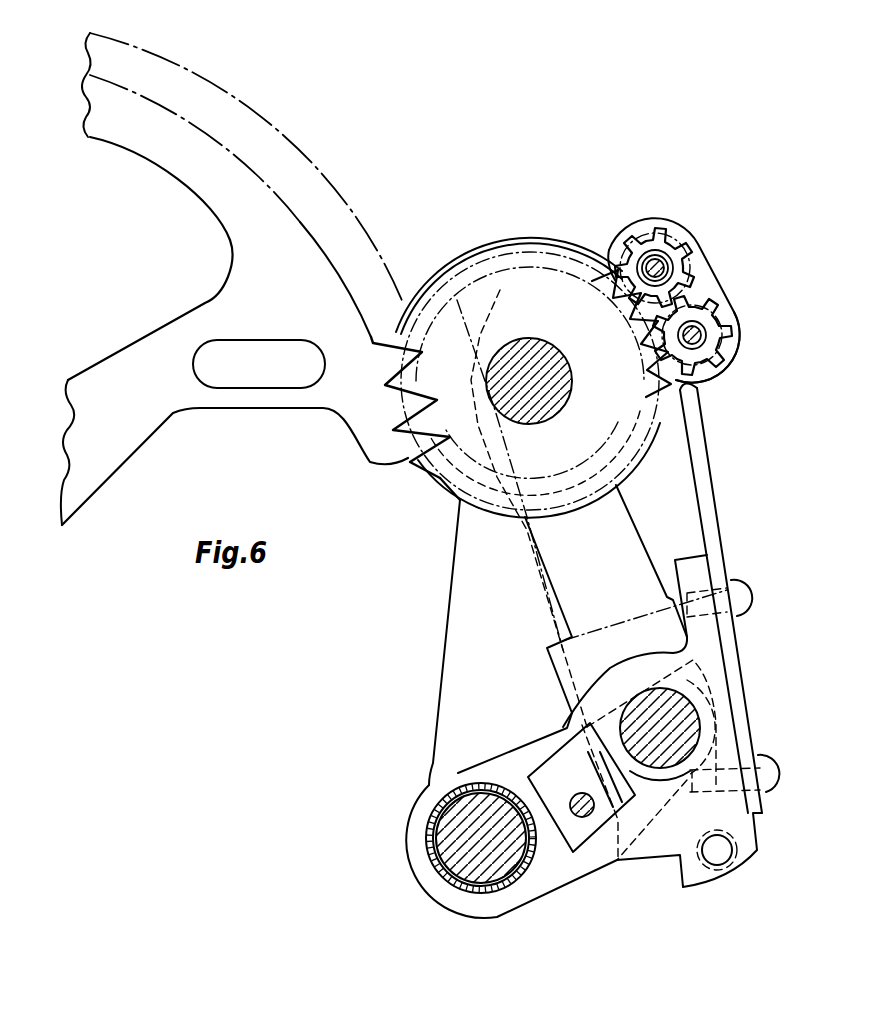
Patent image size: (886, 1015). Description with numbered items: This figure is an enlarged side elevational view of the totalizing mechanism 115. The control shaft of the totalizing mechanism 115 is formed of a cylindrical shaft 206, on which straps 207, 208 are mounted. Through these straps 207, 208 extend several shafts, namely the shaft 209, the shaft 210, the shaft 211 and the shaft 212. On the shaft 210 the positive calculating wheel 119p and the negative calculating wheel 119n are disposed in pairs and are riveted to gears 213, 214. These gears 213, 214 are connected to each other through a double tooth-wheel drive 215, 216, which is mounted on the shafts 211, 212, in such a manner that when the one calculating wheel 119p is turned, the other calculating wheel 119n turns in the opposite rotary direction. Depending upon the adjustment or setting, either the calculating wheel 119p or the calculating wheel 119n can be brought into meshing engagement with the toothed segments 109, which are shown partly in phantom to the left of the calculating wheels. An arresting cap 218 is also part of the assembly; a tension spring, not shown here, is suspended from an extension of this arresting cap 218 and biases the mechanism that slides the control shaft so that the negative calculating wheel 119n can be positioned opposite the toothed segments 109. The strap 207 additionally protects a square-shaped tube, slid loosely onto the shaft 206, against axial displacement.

The toothed segments 109 is at (257, 208).
The positive calculating wheel 119p is at (521, 447).
The negative calculating wheel 119n is at (463, 253).
The gear 213 is at (528, 348).
The gear 214 is at (542, 240).
The double tooth-wheel drive 215 is at (645, 228).
The shaft 211 is at (657, 248).
The shaft 212 is at (697, 323).
The double tooth-wheel drive 216 is at (723, 367).
The arresting cap 218 is at (713, 507).
The shaft 210 is at (442, 497).
The totalizing mechanism 115 is at (511, 698).
The strap 207 is at (511, 635).
The strap 208 is at (651, 561).
The shaft 209 is at (620, 723).
The cylindrical shaft 206 is at (450, 830).